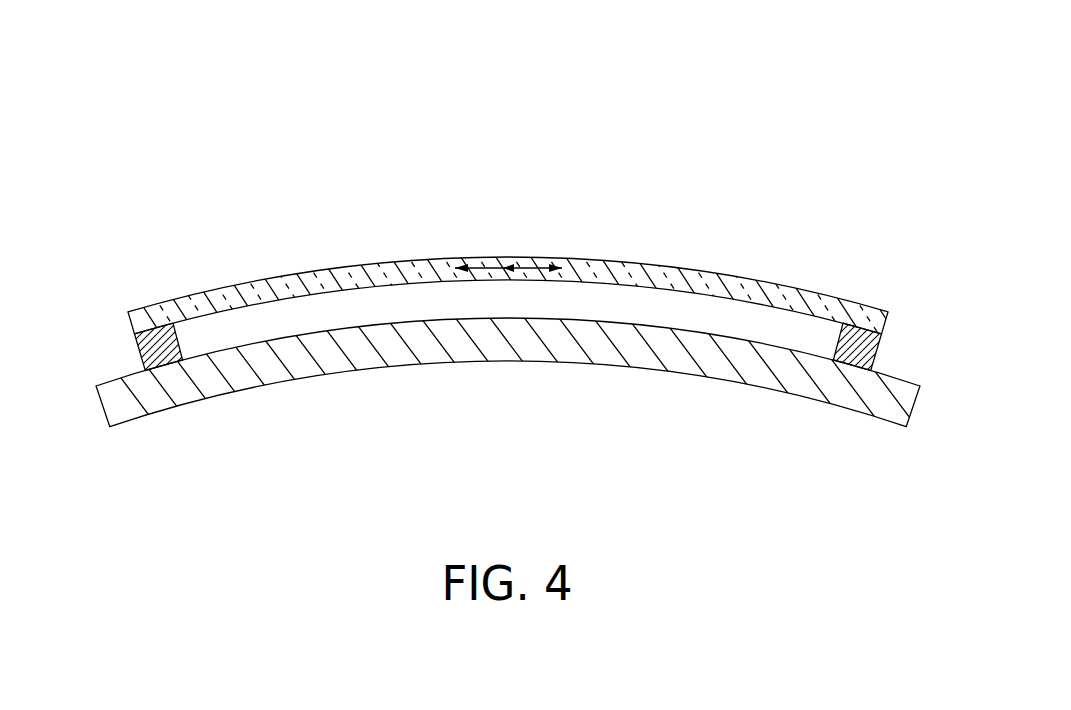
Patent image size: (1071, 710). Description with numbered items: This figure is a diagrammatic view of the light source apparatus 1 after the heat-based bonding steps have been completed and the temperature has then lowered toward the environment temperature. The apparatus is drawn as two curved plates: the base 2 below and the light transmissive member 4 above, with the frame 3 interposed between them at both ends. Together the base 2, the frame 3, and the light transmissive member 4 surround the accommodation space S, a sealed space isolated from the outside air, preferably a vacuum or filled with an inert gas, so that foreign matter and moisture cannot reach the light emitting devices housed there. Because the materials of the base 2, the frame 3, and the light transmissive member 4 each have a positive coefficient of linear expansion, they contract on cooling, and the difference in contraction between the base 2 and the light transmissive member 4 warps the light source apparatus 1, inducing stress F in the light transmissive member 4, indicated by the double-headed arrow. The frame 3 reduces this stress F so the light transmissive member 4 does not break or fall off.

The light source apparatus 1 is at (506, 181).
The base 2 is at (258, 363).
The frame 3 is at (158, 347).
The light transmissive member 4 is at (240, 297).
The accommodation space S is at (624, 296).
The stress F is at (527, 265).